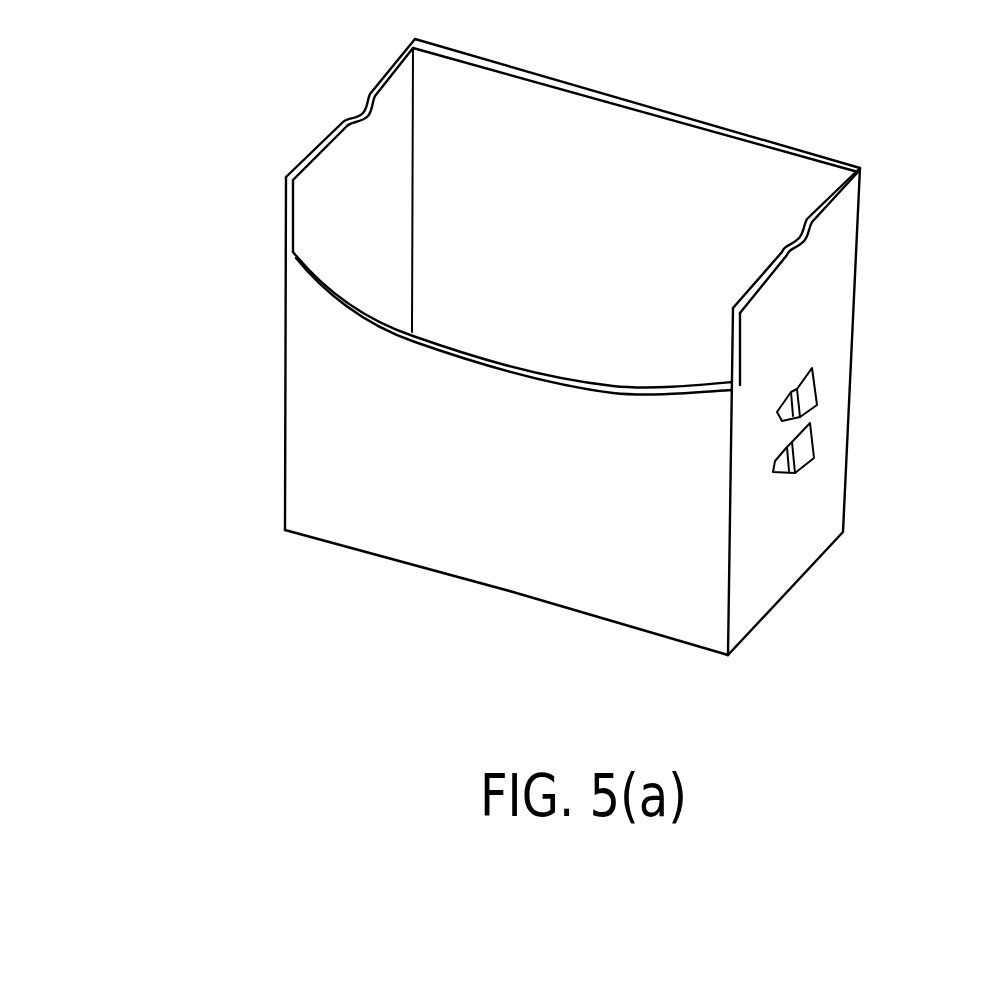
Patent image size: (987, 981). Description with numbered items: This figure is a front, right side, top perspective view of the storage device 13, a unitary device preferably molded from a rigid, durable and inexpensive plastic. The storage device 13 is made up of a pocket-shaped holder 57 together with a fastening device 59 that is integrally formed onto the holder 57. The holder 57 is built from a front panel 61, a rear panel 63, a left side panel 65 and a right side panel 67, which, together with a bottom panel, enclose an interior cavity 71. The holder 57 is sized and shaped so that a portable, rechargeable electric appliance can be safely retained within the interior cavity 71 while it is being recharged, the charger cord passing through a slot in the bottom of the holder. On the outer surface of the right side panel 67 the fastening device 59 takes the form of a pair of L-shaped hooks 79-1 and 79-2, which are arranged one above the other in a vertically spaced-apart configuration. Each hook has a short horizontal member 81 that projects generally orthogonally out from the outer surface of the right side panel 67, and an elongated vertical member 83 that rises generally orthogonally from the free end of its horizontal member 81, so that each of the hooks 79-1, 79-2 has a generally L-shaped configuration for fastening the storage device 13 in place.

The storage device 13 is at (580, 328).
The pocket-shaped holder 57 is at (513, 592).
The fastening device 59 is at (867, 469).
The front panel 61 is at (313, 284).
The rear panel 63 is at (707, 168).
The left side panel 65 is at (332, 177).
The right side panel 67 is at (817, 283).
The interior cavity 71 is at (537, 220).
The L-shaped hook 79-1 is at (866, 363).
The L-shaped hook 79-2 is at (867, 528).
The short horizontal member 81 is at (787, 478).
The elongated vertical member 83 is at (812, 400).